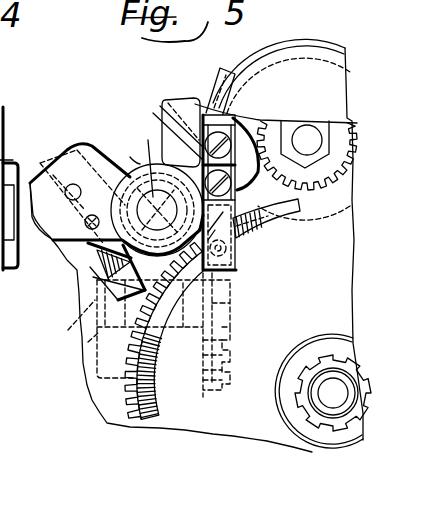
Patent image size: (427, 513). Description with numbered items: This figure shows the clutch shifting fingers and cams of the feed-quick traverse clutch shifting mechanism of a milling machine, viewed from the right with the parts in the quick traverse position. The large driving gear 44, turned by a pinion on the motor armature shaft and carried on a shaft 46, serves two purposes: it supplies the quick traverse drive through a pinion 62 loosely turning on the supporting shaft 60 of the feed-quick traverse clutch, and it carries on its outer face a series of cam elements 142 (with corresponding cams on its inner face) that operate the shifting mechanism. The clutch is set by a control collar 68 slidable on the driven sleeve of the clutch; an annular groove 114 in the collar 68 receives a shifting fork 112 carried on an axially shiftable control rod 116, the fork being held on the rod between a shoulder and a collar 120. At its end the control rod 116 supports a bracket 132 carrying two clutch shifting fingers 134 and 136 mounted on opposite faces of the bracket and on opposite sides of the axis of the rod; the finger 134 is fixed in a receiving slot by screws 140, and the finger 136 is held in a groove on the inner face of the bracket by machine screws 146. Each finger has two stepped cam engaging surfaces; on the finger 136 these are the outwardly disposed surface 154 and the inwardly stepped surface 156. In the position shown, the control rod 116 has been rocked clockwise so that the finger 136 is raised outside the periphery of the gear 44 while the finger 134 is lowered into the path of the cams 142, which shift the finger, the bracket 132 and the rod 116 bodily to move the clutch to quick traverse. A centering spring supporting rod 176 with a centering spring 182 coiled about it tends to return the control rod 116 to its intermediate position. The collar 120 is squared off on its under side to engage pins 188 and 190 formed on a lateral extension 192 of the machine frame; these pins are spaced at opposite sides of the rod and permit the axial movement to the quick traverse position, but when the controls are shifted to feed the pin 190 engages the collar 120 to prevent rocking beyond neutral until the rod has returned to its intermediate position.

The large driving gear 44 is at (130, 412).
The shaft 46 is at (333, 405).
The shaft 60 is at (307, 131).
The pinion 62 is at (270, 122).
The control collar 68 is at (303, 42).
The shifting fork 112 is at (213, 93).
The annular groove 114 is at (221, 67).
The control rod 116 is at (150, 175).
The collar 120 is at (103, 145).
The bracket 132 is at (209, 87).
The clutch shifting finger 134 is at (237, 232).
The clutch shifting finger 136 is at (90, 243).
The screws 140 is at (183, 108).
The cam elements 142 is at (142, 397).
The machine screws 146 is at (72, 188).
The cam engaging surface 154 is at (100, 290).
The cam engaging surface 156 is at (87, 280).
The centering spring supporting rod 176 is at (226, 353).
The centering spring 182 is at (227, 370).
The pin 188 is at (235, 282).
The pin 190 is at (97, 328).
The lateral extension 192 is at (90, 342).